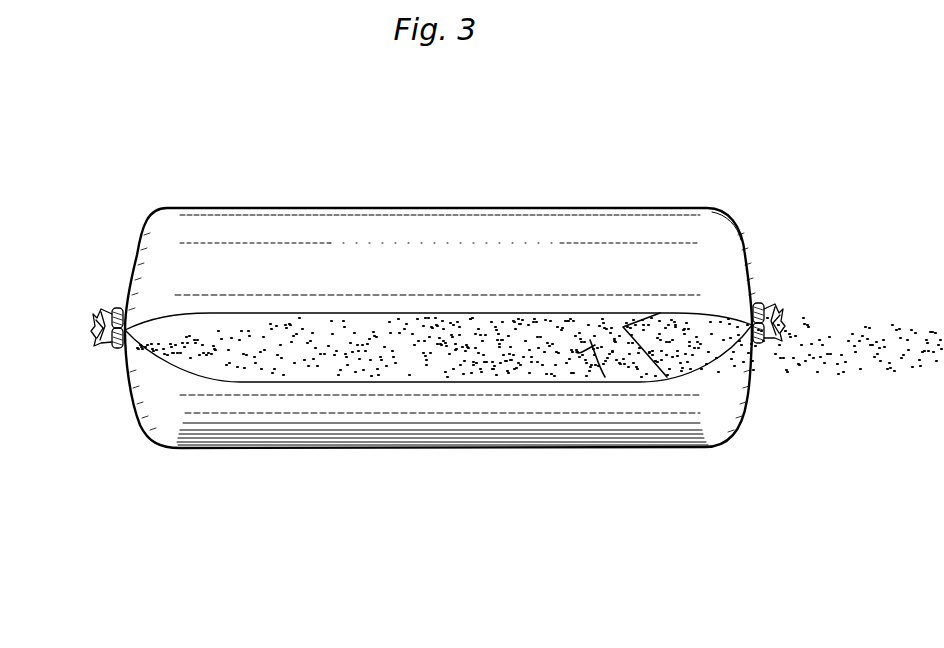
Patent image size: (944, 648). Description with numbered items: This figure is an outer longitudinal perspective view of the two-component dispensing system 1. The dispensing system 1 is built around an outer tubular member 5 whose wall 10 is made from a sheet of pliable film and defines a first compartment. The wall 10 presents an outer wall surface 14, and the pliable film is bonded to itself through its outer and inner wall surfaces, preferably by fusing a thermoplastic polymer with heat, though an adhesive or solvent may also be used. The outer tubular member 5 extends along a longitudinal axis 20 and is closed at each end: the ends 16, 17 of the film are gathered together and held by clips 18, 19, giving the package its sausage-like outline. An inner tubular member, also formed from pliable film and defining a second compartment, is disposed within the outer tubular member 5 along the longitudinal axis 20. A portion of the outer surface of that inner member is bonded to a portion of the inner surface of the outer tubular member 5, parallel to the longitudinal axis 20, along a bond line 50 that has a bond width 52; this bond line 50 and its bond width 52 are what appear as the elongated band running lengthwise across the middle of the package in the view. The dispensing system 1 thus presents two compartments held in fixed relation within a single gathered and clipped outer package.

The dispensing system 1 is at (92, 165).
The outer tubular member 5 is at (602, 202).
The wall 10 is at (687, 208).
The outer wall surface 14 is at (737, 228).
The end 16 is at (116, 350).
The end 17 is at (770, 345).
The clip 18 is at (118, 306).
The clip 19 is at (757, 303).
The longitudinal axis 20 is at (178, 607).
The bond line 50 is at (343, 362).
The bond width 52 is at (623, 327).